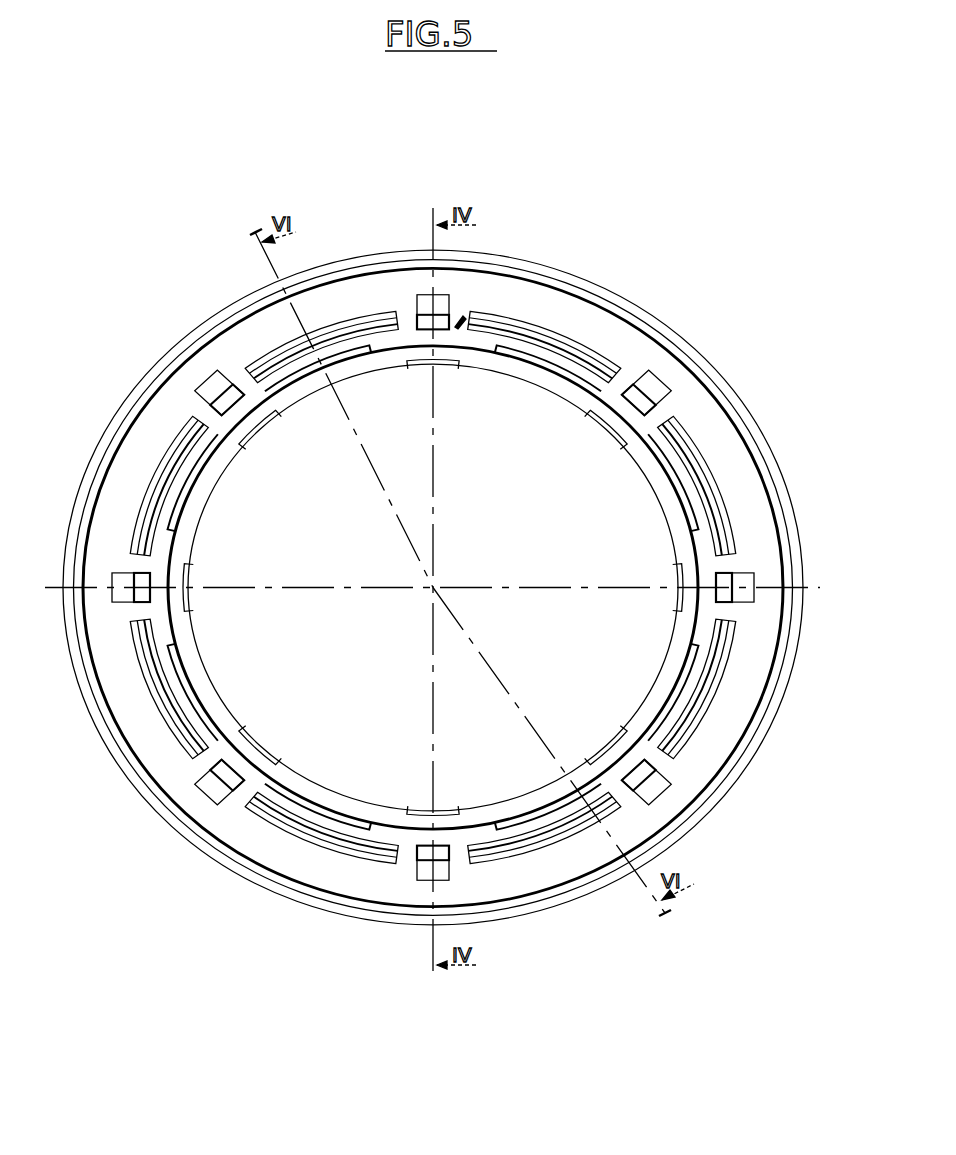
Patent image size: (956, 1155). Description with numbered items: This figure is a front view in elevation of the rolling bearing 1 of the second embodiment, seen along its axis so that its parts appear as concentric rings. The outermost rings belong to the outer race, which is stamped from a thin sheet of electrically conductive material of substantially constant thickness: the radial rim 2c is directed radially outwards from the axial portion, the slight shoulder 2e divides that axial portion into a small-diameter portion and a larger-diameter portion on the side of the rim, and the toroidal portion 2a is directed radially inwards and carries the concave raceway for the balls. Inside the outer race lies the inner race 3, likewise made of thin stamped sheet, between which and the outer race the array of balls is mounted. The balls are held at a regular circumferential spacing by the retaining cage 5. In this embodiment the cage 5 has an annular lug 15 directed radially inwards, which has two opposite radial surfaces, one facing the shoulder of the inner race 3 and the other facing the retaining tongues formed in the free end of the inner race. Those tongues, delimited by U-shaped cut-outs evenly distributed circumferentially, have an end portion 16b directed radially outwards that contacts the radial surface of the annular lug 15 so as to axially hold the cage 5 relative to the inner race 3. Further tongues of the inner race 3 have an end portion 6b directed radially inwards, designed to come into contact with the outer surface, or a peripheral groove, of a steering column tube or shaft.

The rolling bearing 1 is at (140, 889).
The toroidal portion 2a is at (105, 478).
The radial rim 2c is at (372, 268).
The shoulder 2e is at (123, 420).
The inner race 3 is at (633, 387).
The retaining cage 5 is at (452, 360).
The end portion 6b is at (464, 322).
The annular lug 15 is at (595, 392).
The end portion 16b is at (350, 345).